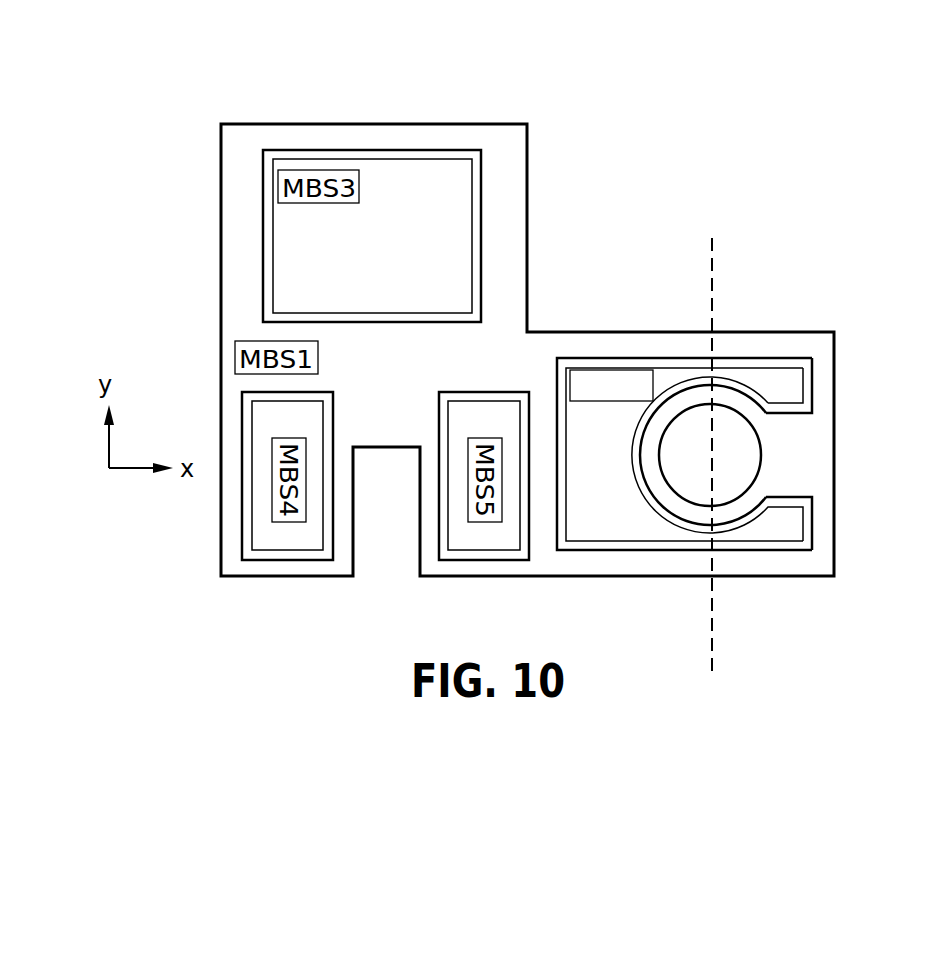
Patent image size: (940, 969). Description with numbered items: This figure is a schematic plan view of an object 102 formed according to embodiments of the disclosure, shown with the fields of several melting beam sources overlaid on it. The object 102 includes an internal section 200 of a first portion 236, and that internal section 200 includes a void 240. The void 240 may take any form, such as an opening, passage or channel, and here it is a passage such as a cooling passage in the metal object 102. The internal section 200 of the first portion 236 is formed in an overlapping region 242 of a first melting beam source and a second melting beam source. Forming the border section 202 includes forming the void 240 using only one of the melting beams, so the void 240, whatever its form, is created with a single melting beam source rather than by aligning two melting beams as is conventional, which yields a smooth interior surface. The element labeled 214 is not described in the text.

The object 102 is at (559, 214).
The internal section 200 is at (625, 530).
The border section 202 is at (743, 507).
The conductive lead 214 is at (786, 367).
The first portion 236 is at (778, 562).
The void 240 is at (741, 458).
The overlapping region 242 is at (826, 381).